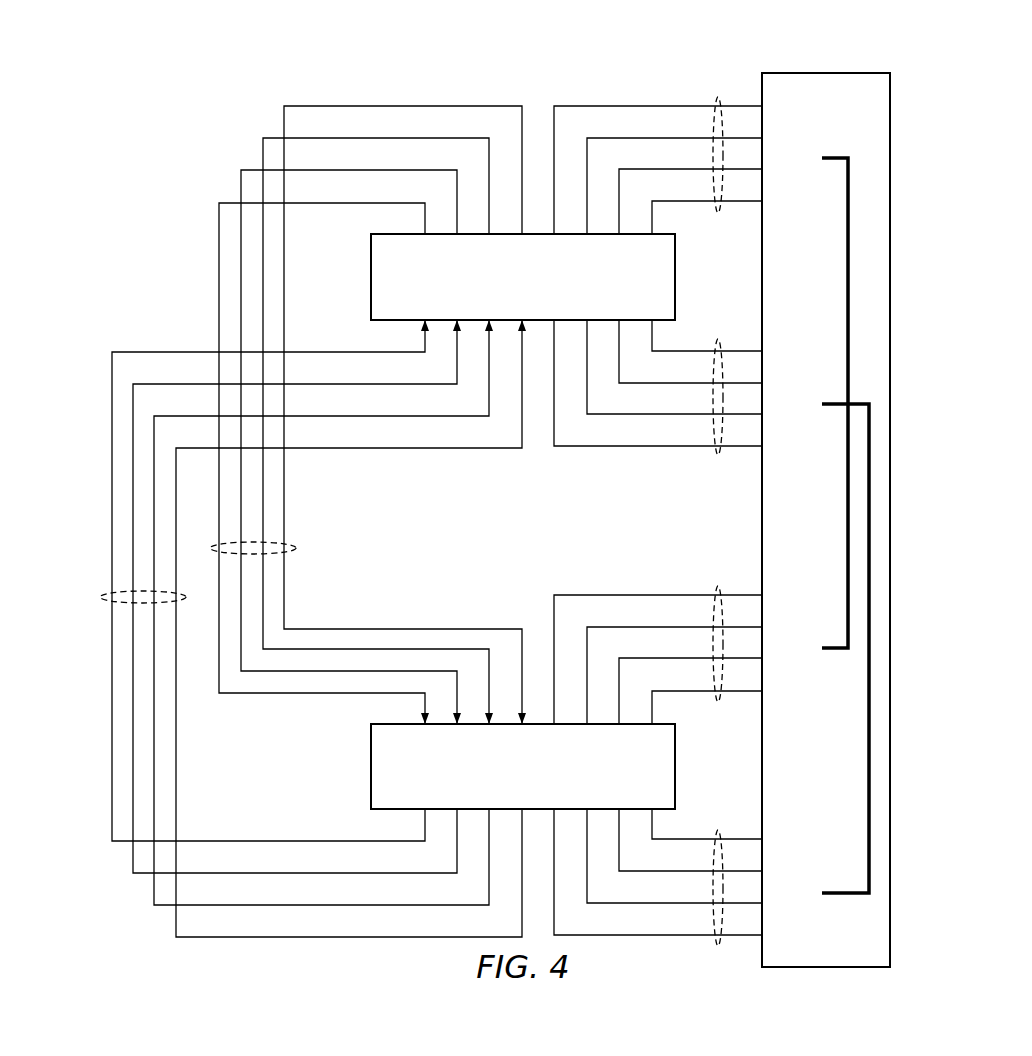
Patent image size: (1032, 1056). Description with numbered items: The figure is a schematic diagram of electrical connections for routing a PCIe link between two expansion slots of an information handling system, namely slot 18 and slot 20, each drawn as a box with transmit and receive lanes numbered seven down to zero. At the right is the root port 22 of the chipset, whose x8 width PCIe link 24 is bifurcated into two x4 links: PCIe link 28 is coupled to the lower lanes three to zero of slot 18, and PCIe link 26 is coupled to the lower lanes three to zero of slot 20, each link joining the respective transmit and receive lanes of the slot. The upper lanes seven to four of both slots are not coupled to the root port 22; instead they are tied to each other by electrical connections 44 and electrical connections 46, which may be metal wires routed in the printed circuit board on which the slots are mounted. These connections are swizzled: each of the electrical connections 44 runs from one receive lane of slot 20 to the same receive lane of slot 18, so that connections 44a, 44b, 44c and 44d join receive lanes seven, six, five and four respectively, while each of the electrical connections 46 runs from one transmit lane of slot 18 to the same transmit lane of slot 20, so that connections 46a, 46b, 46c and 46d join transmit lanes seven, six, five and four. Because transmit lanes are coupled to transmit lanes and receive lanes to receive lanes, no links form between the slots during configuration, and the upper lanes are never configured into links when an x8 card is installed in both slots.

The slot 18 is at (371, 265).
The slot 20 is at (371, 780).
The root port 22 is at (848, 73).
The PCIe link 24 is at (847, 282).
The PCIe link 26 is at (718, 587).
The PCIe link 28 is at (718, 97).
The electrical connections 44 is at (100, 597).
The electrical connection 44a is at (125, 352).
The electrical connection 44b is at (187, 384).
The electrical connection 44c is at (387, 417).
The electrical connection 44d is at (447, 448).
The electrical connections 46 is at (297, 548).
The electrical connection 46a is at (252, 693).
The electrical connection 46b is at (318, 672).
The electrical connection 46c is at (388, 648).
The electrical connection 46d is at (447, 629).